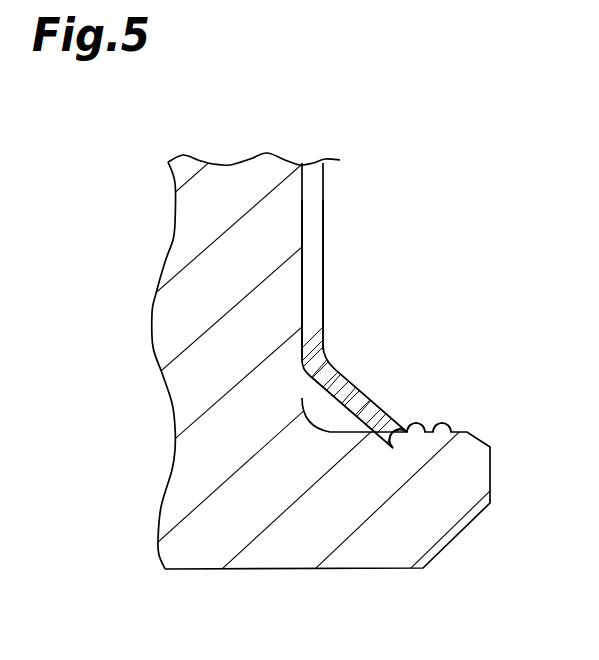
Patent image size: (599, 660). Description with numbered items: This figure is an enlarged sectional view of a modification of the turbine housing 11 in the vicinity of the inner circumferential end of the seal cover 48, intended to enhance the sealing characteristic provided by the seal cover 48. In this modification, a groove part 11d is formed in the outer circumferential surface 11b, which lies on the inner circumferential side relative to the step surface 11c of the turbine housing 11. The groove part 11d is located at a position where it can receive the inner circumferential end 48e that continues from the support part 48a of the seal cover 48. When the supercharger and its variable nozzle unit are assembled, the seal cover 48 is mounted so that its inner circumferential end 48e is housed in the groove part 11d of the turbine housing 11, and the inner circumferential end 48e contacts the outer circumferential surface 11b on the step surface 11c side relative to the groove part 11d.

The turbine housing 11 is at (288, 571).
The outer circumferential surface 11b is at (448, 433).
The step surface 11c is at (308, 283).
The groove part 11d is at (426, 433).
The seal cover 48 is at (325, 240).
The support part 48a is at (325, 299).
The inner circumferential end 48e is at (405, 425).